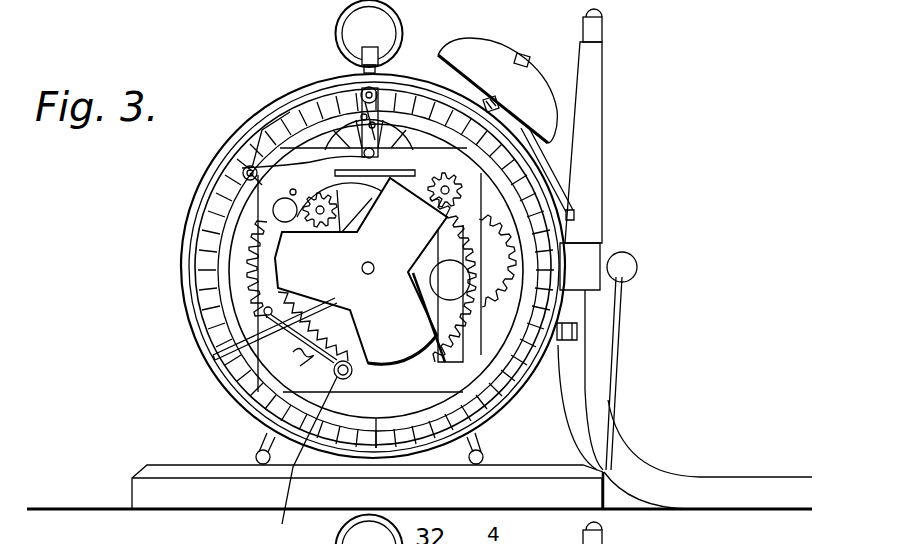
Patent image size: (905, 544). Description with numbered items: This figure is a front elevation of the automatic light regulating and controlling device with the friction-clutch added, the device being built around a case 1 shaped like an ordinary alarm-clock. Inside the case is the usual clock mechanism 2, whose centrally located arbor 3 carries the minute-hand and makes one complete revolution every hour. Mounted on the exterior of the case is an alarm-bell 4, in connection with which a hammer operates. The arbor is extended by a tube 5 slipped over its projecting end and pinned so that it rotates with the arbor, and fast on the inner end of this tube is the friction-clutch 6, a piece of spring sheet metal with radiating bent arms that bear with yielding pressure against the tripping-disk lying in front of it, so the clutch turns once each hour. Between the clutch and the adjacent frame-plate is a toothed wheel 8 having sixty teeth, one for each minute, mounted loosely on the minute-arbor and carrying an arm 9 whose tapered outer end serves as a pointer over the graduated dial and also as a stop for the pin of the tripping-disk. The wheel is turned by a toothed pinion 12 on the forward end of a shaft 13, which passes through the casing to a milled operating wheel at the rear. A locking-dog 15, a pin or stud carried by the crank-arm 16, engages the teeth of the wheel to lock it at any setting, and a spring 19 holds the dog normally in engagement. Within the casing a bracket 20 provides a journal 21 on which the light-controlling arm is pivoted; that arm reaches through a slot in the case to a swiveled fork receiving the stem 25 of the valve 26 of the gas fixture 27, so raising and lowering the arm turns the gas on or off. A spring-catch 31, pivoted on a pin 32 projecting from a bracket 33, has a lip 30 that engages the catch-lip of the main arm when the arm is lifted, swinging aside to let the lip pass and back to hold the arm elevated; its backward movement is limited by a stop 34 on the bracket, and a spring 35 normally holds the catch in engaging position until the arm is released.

The case 1 is at (178, 279).
The clock mechanism 2 is at (462, 370).
The arbor 3 is at (364, 267).
The alarm-bell 4 is at (482, 58).
The tube 5 is at (570, 216).
The friction-clutch 6 is at (290, 279).
The toothed wheel 8 is at (633, 280).
The arm 9 is at (237, 351).
The toothed pinion 12 is at (455, 190).
The shaft 13 is at (500, 215).
The locking-dog 15 is at (330, 375).
The crank-arm 16 is at (302, 460).
The spring 19 is at (287, 355).
The bracket 20 is at (248, 160).
The journal 21 is at (243, 176).
The stem 25 is at (618, 355).
The valve 26 is at (588, 258).
The gas fixture 27 is at (596, 90).
The lip 30 is at (300, 156).
The spring-catch 31 is at (362, 90).
The pin 32 is at (380, 87).
The bracket 33 is at (340, 108).
The stop 34 is at (310, 118).
The spring 35 is at (382, 100).